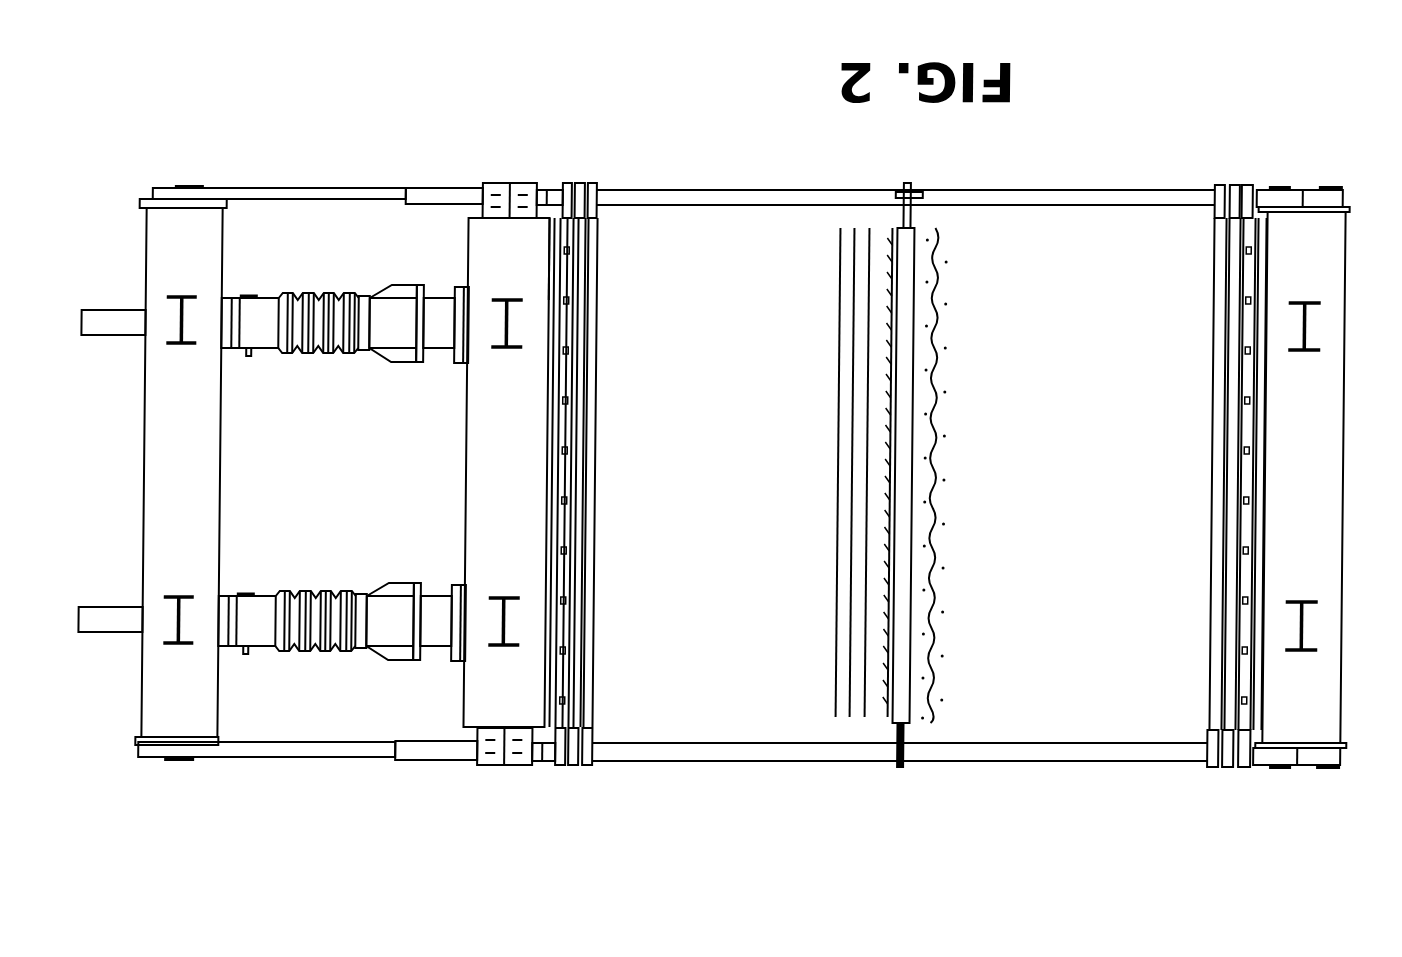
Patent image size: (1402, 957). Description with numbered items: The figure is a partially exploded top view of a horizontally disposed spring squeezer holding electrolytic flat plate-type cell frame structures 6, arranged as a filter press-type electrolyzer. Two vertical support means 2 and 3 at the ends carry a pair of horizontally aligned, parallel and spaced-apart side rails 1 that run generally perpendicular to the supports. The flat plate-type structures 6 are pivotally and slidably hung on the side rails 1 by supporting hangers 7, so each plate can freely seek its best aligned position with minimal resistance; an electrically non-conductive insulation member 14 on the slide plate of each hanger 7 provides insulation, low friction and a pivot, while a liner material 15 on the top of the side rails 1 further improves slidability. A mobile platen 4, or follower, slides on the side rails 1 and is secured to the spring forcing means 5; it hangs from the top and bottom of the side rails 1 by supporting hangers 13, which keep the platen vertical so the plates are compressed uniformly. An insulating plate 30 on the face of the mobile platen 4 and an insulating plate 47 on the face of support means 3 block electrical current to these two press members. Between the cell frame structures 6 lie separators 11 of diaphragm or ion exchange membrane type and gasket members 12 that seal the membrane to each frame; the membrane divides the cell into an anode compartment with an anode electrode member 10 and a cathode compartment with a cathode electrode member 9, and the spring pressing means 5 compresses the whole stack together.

The side rails 1 is at (760, 190).
The vertical support means 2 is at (160, 672).
The vertical support means 3 is at (1328, 558).
The mobile platen 4 is at (466, 445).
The spring forcing means 5 is at (230, 395).
The flat plate-type structures 6 is at (608, 795).
The supporting hangers 7 is at (577, 183).
The cathode electrode member 9 is at (936, 537).
The anode electrode member 10 is at (890, 330).
The separators 11 is at (852, 460).
The gasket members 12 is at (837, 673).
The supporting hangers 13 is at (497, 183).
The insulation member 14 is at (607, 192).
The liner material 15 is at (1062, 192).
The insulating plate 30 is at (546, 240).
The insulating plate 47 is at (1267, 190).